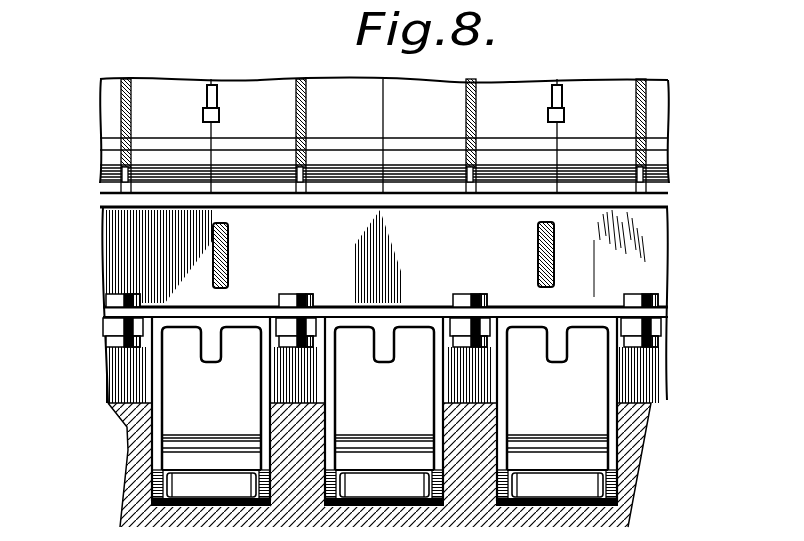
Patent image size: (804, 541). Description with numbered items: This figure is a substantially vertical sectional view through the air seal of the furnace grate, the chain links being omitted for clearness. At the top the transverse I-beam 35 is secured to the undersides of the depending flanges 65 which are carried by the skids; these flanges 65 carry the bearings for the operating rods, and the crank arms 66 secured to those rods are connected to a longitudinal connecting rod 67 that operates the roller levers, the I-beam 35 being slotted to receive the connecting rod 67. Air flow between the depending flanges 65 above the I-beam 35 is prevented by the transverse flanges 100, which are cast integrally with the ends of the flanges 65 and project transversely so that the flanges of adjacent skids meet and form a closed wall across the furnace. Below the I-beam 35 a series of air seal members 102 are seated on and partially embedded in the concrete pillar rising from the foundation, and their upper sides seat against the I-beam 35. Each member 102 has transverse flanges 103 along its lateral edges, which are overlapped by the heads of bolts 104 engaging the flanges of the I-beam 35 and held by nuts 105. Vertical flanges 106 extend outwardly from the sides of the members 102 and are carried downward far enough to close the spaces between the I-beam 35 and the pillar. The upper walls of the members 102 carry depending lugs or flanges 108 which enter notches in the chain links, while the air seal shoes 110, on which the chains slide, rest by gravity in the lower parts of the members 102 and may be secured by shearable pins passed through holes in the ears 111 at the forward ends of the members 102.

The transverse flanges 100 is at (170, 92).
The crank arms 66 is at (218, 92).
The depending flanges (plates) 65 is at (120, 102).
The transverse I-beam 35 is at (385, 305).
The longitudinal connecting rod 67 is at (213, 270).
The nuts 105 is at (283, 322).
The transverse flanges 103 is at (277, 330).
The bolts 104 is at (313, 345).
The depending lugs or flanges 108 is at (208, 351).
The vertical flanges 106 is at (457, 380).
The air seal members 102 is at (614, 422).
The air seal shoes 110 is at (666, 448).
The ears 111 is at (152, 477).